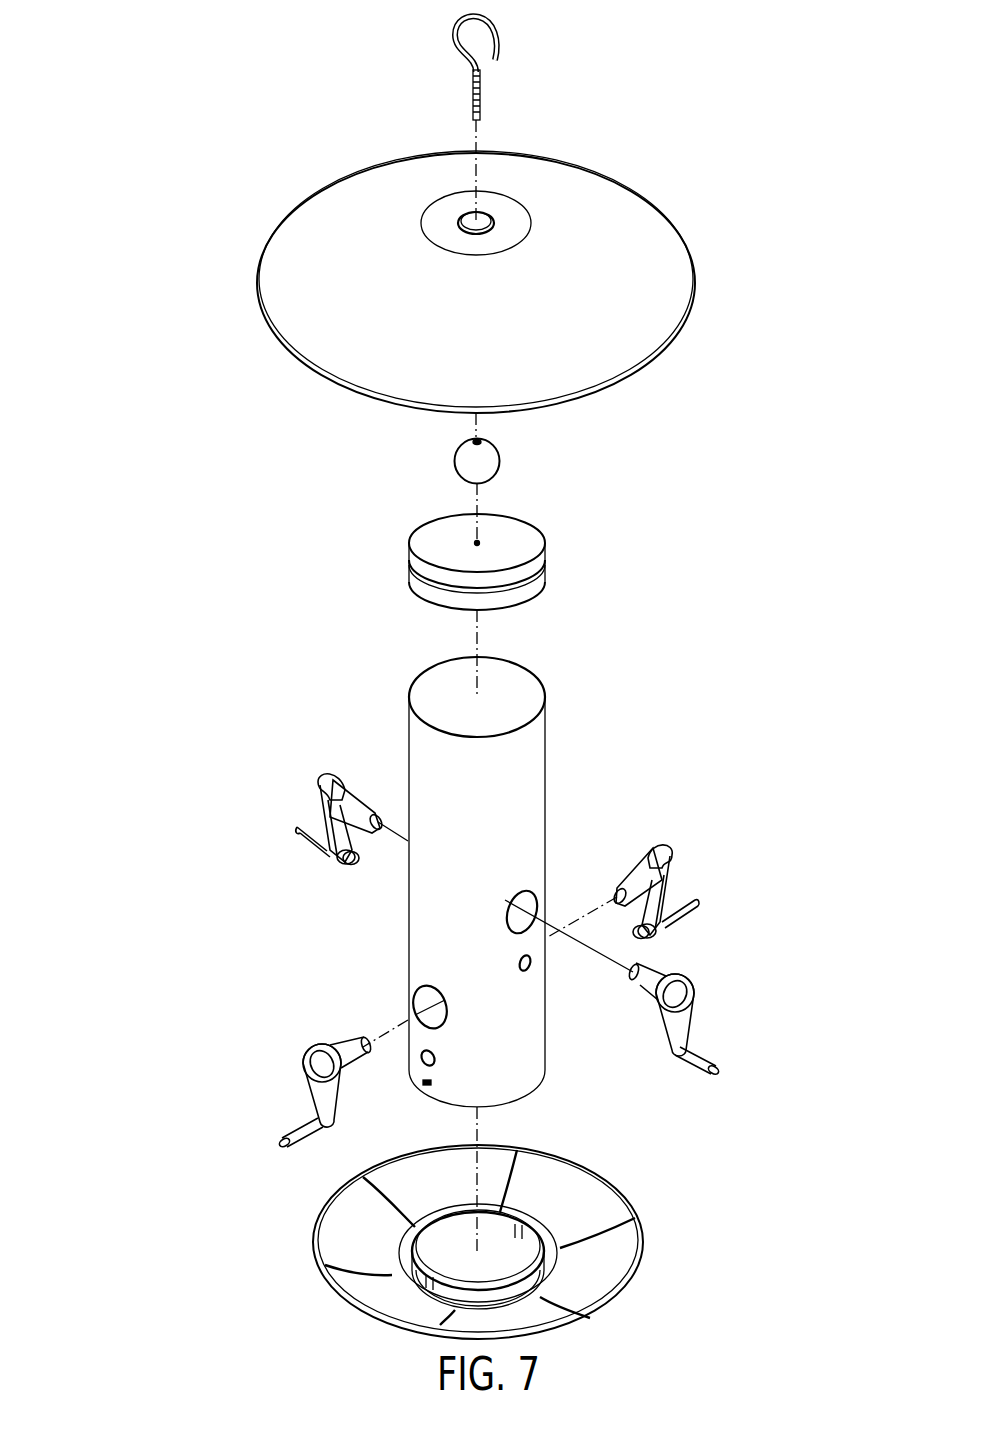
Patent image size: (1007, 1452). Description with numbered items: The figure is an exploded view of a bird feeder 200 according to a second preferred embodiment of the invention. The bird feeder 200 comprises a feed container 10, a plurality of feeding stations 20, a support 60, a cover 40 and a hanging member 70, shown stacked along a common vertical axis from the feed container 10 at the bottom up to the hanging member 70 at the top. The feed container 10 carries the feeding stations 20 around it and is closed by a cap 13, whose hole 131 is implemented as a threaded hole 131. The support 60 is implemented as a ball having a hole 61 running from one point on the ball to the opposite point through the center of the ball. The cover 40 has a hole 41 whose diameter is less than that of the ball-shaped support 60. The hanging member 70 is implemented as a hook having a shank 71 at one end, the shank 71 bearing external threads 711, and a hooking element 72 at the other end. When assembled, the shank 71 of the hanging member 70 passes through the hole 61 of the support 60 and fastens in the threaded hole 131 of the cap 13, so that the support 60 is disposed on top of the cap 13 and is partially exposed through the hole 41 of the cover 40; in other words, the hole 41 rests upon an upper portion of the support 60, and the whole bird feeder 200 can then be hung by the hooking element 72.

The bird feeder 200 is at (158, 108).
The hanging member 70 is at (342, 52).
The shank 71 is at (472, 76).
The external threads 711 is at (480, 101).
The hooking element 72 is at (492, 31).
The cover 40 is at (638, 308).
The hole 41 is at (460, 222).
The support 60 is at (466, 462).
The hole 61 is at (481, 441).
The cap 13 is at (525, 560).
The threaded hole 131 is at (477, 543).
The feed container 10 is at (382, 695).
The feeding stations 20 is at (285, 798).